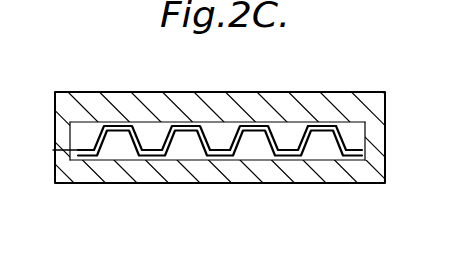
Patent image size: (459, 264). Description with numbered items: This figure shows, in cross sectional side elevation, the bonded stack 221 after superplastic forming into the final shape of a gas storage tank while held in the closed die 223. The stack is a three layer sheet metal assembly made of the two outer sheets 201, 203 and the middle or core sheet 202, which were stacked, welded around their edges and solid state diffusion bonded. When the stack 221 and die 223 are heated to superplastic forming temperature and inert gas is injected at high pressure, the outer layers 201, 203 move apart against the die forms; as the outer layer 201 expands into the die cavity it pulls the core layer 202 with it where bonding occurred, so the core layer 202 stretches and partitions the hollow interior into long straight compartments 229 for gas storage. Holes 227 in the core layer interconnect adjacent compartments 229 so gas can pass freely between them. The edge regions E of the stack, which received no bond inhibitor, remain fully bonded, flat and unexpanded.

The bonded stack 221 is at (392, 156).
The closed die 223 is at (125, 92).
The outer sheet 203 is at (121, 160).
The outer sheet 201 is at (157, 128).
The core sheet 202 is at (258, 131).
The holes 227 is at (236, 141).
The compartments 229 is at (313, 145).
The edge regions E is at (53, 151).